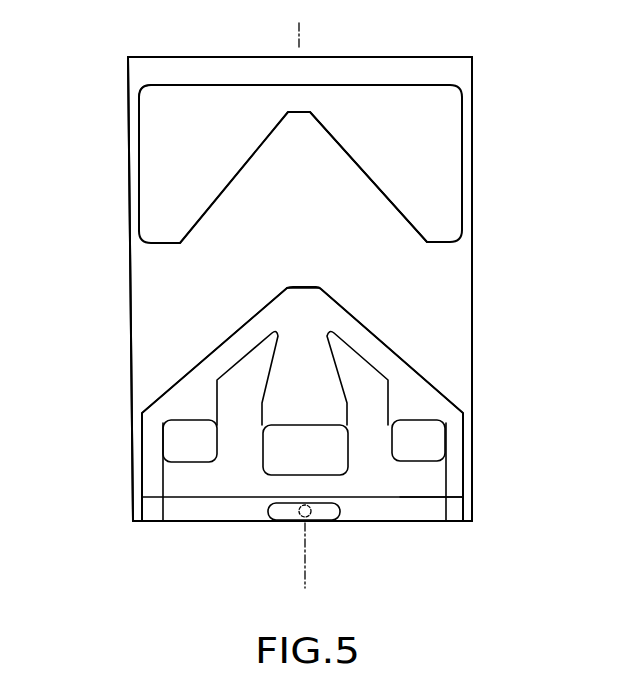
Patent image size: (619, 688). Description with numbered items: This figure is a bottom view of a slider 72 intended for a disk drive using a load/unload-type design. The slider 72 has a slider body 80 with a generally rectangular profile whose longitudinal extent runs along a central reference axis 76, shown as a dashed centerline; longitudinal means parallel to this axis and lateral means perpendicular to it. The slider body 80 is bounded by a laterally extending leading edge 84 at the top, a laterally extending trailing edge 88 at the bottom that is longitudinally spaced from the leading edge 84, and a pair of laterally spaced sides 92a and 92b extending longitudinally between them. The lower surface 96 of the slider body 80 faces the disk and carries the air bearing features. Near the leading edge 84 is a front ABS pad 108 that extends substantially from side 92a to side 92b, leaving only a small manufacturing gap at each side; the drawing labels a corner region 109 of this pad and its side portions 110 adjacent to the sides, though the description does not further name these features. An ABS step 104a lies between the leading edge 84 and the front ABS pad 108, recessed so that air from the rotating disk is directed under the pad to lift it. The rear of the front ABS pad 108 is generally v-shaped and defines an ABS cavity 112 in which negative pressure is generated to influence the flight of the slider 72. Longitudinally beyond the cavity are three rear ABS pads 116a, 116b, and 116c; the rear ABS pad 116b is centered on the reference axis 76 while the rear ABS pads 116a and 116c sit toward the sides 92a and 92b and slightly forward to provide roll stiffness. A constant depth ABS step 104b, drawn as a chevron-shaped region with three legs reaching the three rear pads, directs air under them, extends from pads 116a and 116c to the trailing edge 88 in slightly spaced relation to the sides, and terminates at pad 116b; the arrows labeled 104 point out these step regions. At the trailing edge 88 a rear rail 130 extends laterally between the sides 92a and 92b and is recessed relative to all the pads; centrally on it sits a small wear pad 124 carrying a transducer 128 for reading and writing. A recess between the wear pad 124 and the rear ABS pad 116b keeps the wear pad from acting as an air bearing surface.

The slider 72 is at (473, 180).
The central reference axis 76 is at (300, 37).
The slider body 80 is at (473, 283).
The leading edge 84 is at (437, 57).
The trailing edge 88 is at (412, 523).
The side 92a is at (130, 320).
The side 92b is at (473, 338).
The lower surface 96 is at (192, 287).
The contact beams 104 is at (366, 193).
The ABS step 104a is at (352, 70).
The constant depth ABS step 104b is at (177, 397).
The front ABS pad 108 is at (408, 131).
The corner 109 is at (193, 85).
The side portions 110 is at (138, 133).
The ABS cavity 112 is at (325, 190).
The rear ABS pad 116a is at (212, 455).
The rear ABS pad 116b is at (327, 463).
The rear ABS pad 116c is at (366, 501).
The wear pad 124 is at (278, 513).
The transducer 128 is at (310, 510).
The rear rail 130 is at (420, 508).